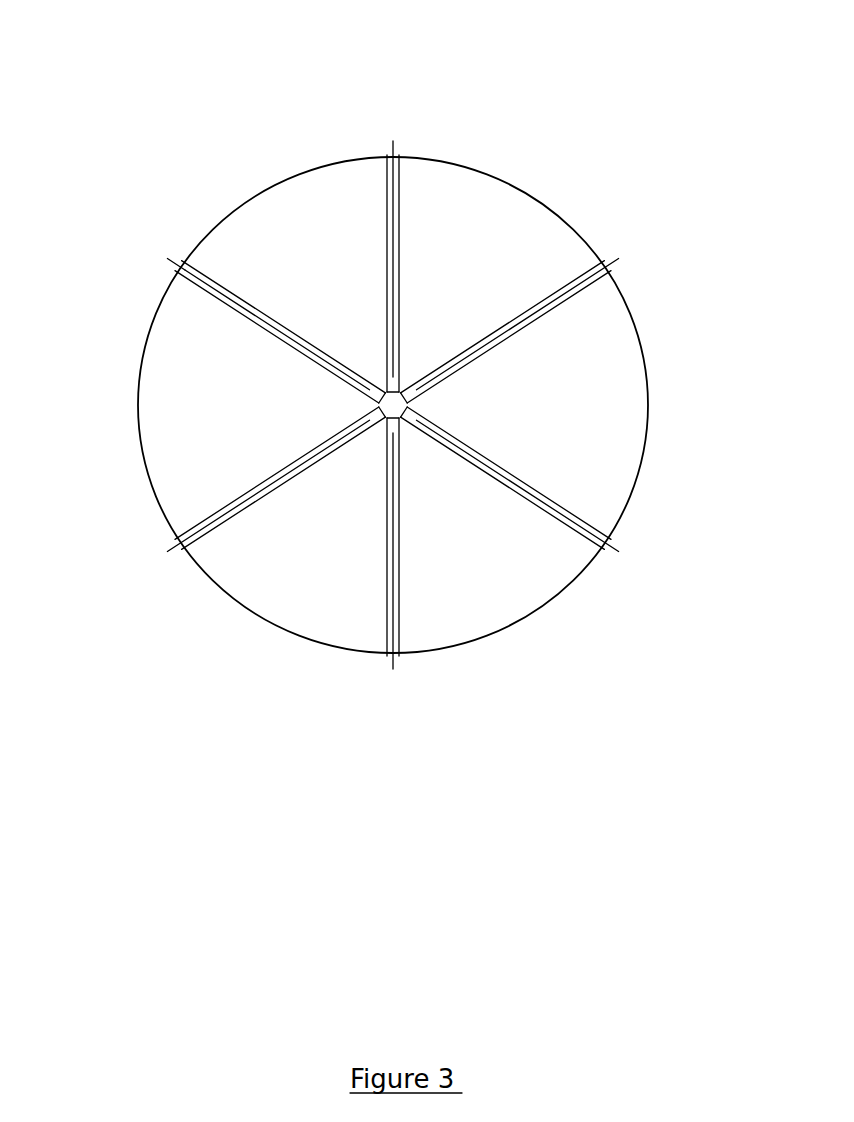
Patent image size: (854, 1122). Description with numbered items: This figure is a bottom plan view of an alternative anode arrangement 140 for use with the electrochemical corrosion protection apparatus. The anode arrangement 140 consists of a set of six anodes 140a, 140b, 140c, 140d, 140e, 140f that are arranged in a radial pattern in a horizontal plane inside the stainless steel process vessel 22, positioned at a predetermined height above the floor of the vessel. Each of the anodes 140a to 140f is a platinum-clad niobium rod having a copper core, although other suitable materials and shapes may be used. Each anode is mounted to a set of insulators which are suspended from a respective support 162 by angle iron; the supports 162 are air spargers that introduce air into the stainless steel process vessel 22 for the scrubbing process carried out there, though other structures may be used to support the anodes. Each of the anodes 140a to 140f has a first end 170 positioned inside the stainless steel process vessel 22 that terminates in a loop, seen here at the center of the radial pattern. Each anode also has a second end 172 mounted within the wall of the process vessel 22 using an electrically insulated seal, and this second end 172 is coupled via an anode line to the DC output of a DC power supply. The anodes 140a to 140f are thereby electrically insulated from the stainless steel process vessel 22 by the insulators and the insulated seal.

The anode arrangement 140 is at (98, 78).
The stainless steel process vessel 22 is at (250, 610).
The first end 170 is at (370, 366).
The anode 140a is at (236, 299).
The anode 140b is at (393, 218).
The anode 140c is at (560, 290).
The anode 140d is at (585, 518).
The anode 140e is at (395, 630).
The anode 140f is at (203, 535).
The support 162 is at (206, 293).
The second end 172 is at (162, 276).